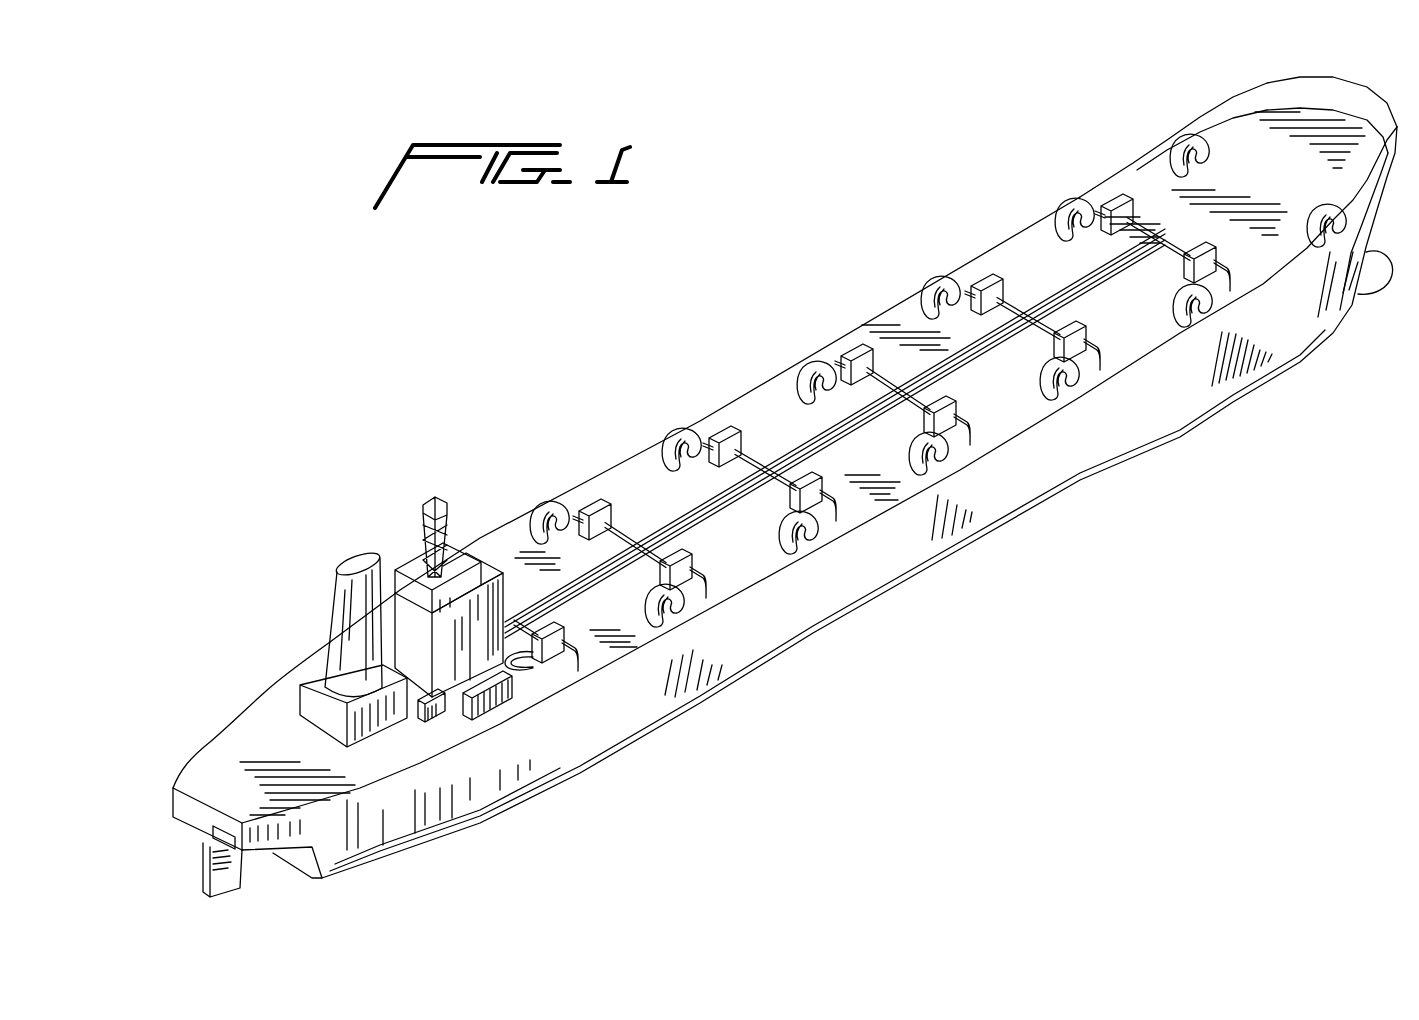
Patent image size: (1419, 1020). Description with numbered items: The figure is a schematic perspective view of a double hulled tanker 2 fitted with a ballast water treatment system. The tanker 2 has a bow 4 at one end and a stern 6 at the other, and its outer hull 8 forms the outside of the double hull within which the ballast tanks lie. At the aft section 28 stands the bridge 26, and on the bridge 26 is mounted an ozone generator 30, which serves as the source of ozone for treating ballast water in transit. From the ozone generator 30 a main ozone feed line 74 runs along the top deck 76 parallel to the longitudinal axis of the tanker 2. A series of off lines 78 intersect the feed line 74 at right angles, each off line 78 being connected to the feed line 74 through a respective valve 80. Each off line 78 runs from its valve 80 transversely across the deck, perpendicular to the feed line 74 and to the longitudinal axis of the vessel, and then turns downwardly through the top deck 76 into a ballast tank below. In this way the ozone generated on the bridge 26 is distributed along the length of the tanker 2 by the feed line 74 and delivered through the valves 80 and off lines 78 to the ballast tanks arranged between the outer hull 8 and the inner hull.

The tanker 2 is at (797, 323).
The bow 4 is at (1380, 92).
The stern 6 is at (210, 742).
The outer hull 8 is at (513, 773).
The bridge 26 is at (405, 742).
The aft section 28 is at (300, 672).
The ozone generator 30 is at (515, 683).
The main ozone feed line 74 is at (712, 513).
The top deck 76 is at (620, 458).
The off line 78 is at (1100, 190).
The valve 80 is at (1122, 175).